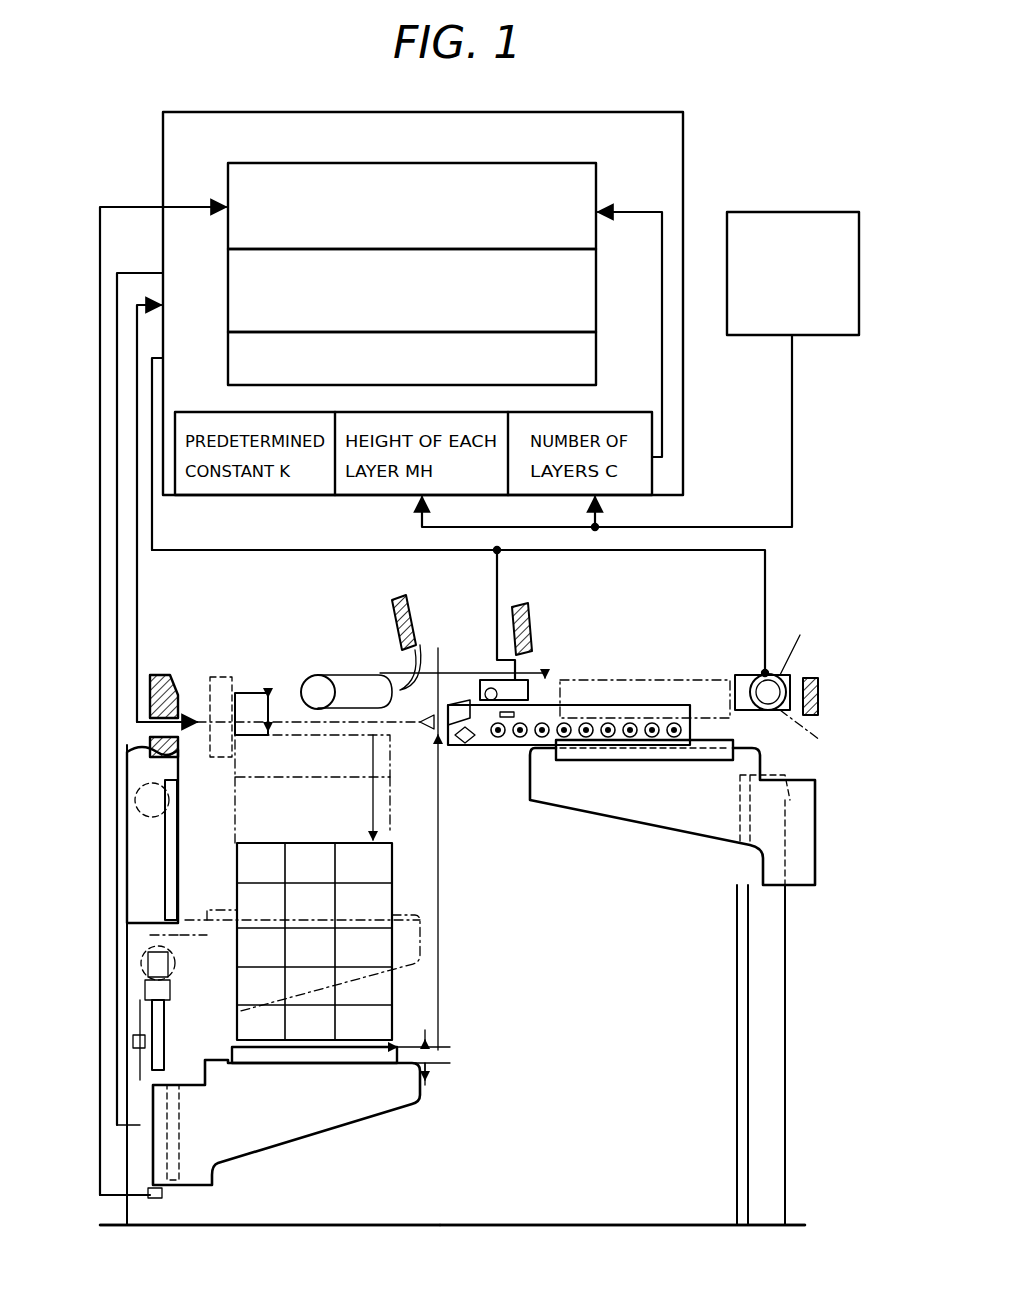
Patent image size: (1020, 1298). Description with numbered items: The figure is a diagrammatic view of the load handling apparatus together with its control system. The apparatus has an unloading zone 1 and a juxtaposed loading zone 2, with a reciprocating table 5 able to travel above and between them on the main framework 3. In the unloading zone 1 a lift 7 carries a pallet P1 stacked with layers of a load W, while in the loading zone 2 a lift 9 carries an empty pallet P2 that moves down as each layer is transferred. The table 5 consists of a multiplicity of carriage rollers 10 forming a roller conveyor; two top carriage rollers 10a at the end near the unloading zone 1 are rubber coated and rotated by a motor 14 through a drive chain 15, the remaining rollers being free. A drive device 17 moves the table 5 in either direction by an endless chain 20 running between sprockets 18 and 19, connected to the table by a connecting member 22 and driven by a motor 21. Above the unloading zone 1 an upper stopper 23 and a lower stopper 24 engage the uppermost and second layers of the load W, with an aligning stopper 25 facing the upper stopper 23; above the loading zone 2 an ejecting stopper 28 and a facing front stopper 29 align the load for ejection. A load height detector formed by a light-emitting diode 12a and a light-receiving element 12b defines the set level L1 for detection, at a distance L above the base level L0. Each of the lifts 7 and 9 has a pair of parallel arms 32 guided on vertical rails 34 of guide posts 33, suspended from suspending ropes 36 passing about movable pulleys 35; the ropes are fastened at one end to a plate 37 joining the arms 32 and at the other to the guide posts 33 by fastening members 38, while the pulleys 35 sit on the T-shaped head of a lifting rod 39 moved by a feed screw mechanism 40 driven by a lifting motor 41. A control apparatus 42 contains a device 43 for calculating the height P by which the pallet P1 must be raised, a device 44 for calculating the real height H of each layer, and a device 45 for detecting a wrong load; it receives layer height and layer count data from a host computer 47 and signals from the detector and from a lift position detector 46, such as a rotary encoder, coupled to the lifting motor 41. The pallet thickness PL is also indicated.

The unloading zone 1 is at (309, 1276).
The loading zone 2 is at (664, 1276).
The main framework 3 is at (122, 755).
The reciprocating table 5 is at (640, 692).
The lift 7 is at (408, 968).
The lift 9 is at (683, 880).
The carriage rollers 10 is at (580, 745).
The top carriage rollers 10a is at (462, 745).
The light-emitting diode 12a is at (222, 760).
The light-receiving element 12b is at (408, 775).
The motor 14 is at (470, 675).
The drive chain 15 is at (435, 650).
The device for driving the reciprocating table 17 is at (777, 662).
The sprocket 18 is at (308, 675).
The sprocket 19 is at (785, 680).
The endless chain 20 is at (704, 680).
The motor 21 is at (815, 680).
The connecting member 22 is at (495, 745).
The upper stopper 23 is at (201, 678).
The lower stopper 24 is at (215, 760).
The aligning stopper 25 is at (405, 680).
The ejecting stopper 28 is at (535, 655).
The front stopper 29 is at (800, 710).
The parallel arms 32 is at (637, 830).
The guide posts 33 is at (140, 900).
The vertical rails 34 is at (165, 860).
The movable pulleys 35 is at (135, 800).
The suspending ropes 36 is at (152, 1015).
The plate 37 is at (180, 1130).
The fastening members 38 is at (133, 1045).
The lifting rod 39 is at (145, 990).
The feed screw mechanism 40 is at (140, 1080).
The lifting motor 41 is at (117, 1125).
The control apparatus 42 is at (683, 155).
The device for calculating the height by which a pallet will have to be raised 43 is at (592, 192).
The device for calculating the real height of each layer 44 is at (592, 292).
The device for detecting a wrong load 45 is at (592, 362).
The lift position detector 46 is at (148, 1193).
The host computer 47 is at (818, 212).
The load W is at (315, 842).
The real height of each layer H is at (251, 714).
The distance from base level to set level L is at (445, 892).
The set level of height for detection L1 is at (436, 680).
The base level L0 is at (452, 1062).
The height by which the pallet has to be raised P is at (361, 787).
The height of the pallet PL is at (460, 1045).
The pallet P1 is at (310, 1047).
The empty pallet P2 is at (700, 760).